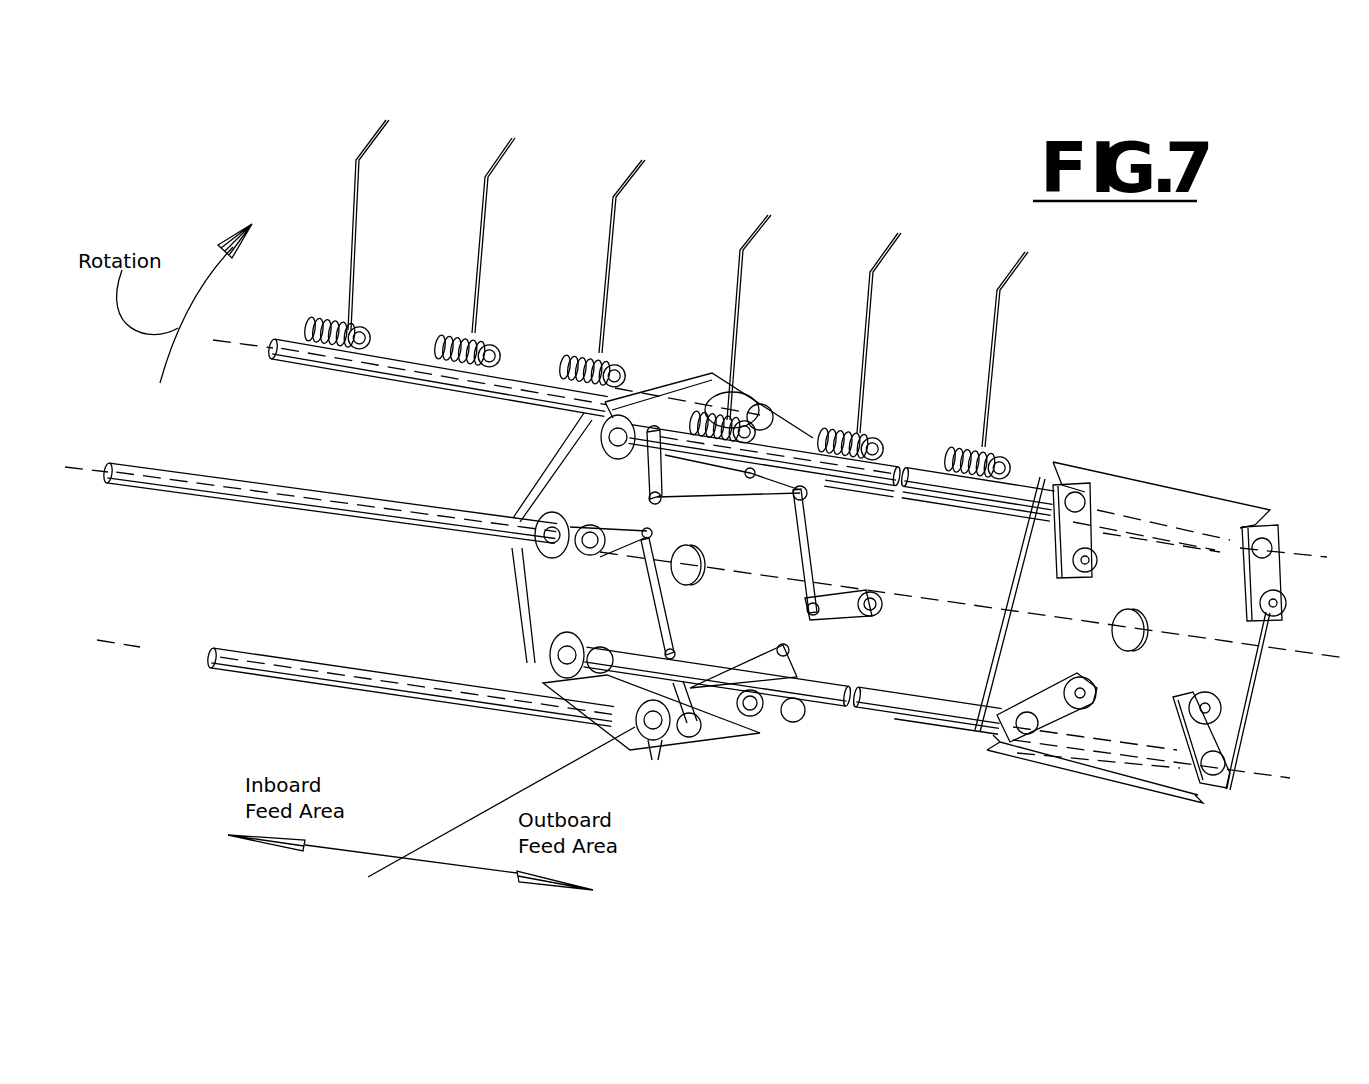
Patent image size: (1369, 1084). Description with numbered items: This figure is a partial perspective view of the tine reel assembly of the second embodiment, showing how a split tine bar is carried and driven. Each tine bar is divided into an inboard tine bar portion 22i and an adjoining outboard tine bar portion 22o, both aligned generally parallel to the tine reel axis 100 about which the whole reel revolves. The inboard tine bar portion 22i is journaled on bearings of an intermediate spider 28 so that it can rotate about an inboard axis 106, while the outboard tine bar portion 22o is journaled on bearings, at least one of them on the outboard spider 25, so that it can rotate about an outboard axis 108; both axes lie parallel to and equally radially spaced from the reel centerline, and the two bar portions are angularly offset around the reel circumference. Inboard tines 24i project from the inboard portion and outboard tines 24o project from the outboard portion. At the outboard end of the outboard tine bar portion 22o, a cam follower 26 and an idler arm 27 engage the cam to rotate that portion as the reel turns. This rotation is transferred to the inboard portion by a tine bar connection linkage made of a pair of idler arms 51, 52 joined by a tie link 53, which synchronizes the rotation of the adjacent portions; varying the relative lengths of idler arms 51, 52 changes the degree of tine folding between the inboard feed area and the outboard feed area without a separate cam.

The inboard tine bar portion 22i is at (388, 378).
The outboard tine bar portion 22o is at (993, 497).
The inboard tine 24i is at (362, 185).
The outboard tine 24o is at (745, 240).
The outboard spider 25 is at (1143, 490).
The cam follower 26 is at (1293, 580).
The idler arm 27 is at (1250, 545).
The intermediate spider 28 is at (771, 561).
The idler arm 51 is at (608, 533).
The idler arm 52 is at (640, 472).
The tie link 53 is at (693, 490).
The tine reel axis 100 is at (1293, 653).
The inboard axis 106 is at (228, 347).
The outboard axis 108 is at (1327, 557).